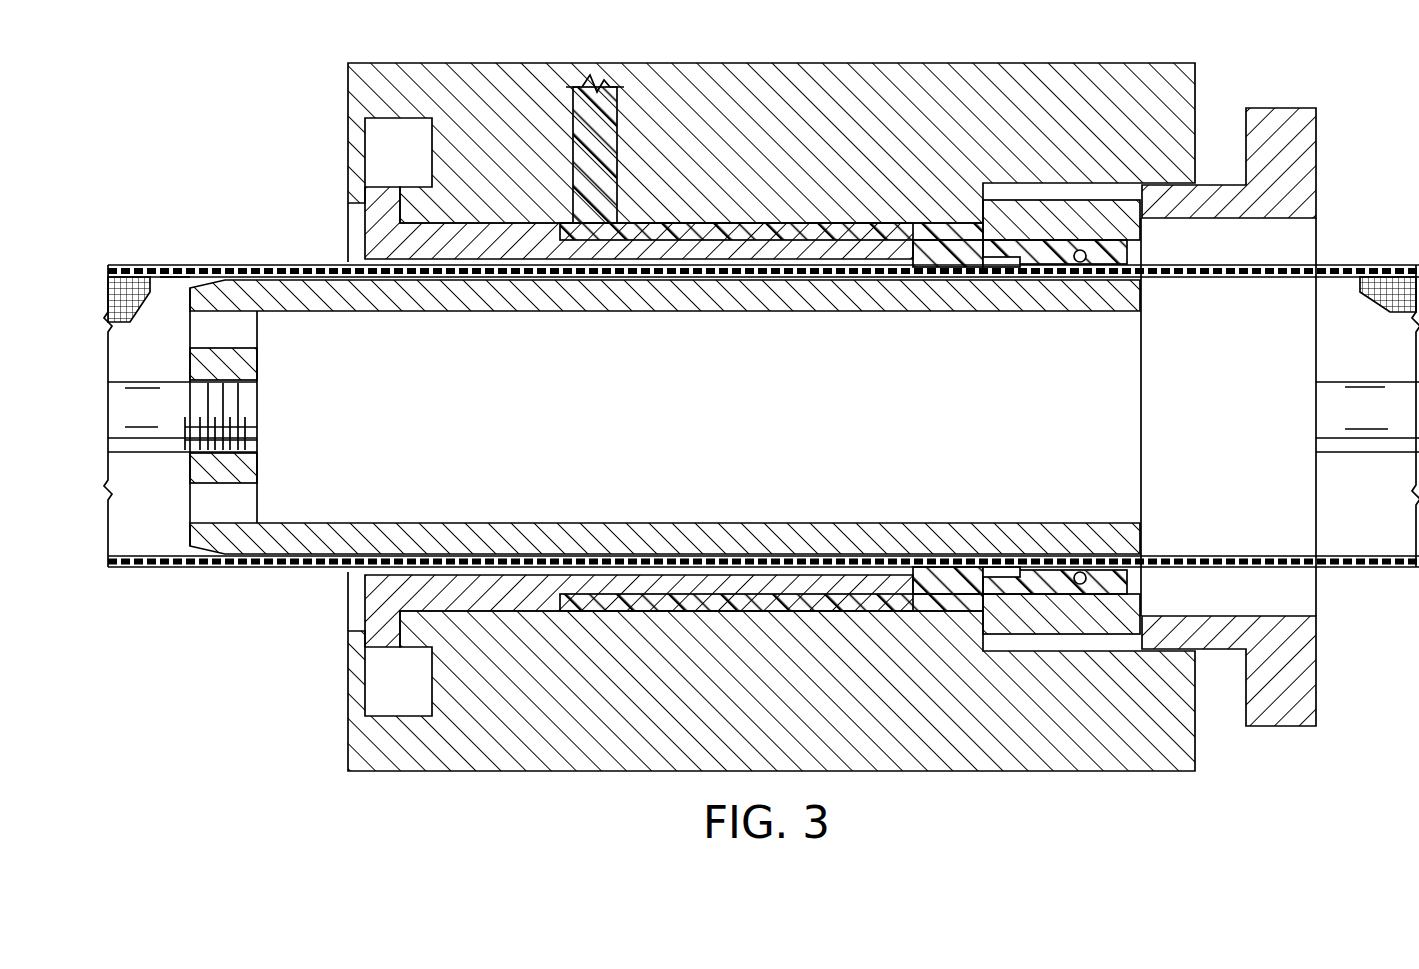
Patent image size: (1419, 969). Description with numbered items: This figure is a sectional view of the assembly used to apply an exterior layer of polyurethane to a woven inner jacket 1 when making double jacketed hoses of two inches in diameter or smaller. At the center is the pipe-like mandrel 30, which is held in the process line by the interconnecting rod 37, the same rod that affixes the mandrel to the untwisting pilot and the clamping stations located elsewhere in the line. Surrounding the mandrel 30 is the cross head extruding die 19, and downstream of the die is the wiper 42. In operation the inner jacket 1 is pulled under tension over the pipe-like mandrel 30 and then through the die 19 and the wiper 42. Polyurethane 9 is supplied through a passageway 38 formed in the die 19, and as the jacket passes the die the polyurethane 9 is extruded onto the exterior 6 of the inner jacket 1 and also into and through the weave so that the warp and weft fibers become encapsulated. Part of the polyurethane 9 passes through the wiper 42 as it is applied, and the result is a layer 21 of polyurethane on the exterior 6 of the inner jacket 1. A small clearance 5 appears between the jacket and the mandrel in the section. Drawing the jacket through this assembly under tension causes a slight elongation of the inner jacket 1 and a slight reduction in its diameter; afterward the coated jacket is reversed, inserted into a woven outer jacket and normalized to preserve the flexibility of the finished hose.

The inner jacket 1 is at (140, 268).
The gap 5 is at (177, 278).
The exterior of the inner jacket 6 is at (222, 264).
The polyurethane 9 is at (795, 235).
The die 19 is at (917, 76).
The layer of polyurethane 21 is at (1205, 265).
The pipe-like mandrel 30 is at (292, 288).
The interconnecting rod 37 is at (156, 440).
The passageway 38 is at (607, 87).
The wiper 42 is at (1058, 205).